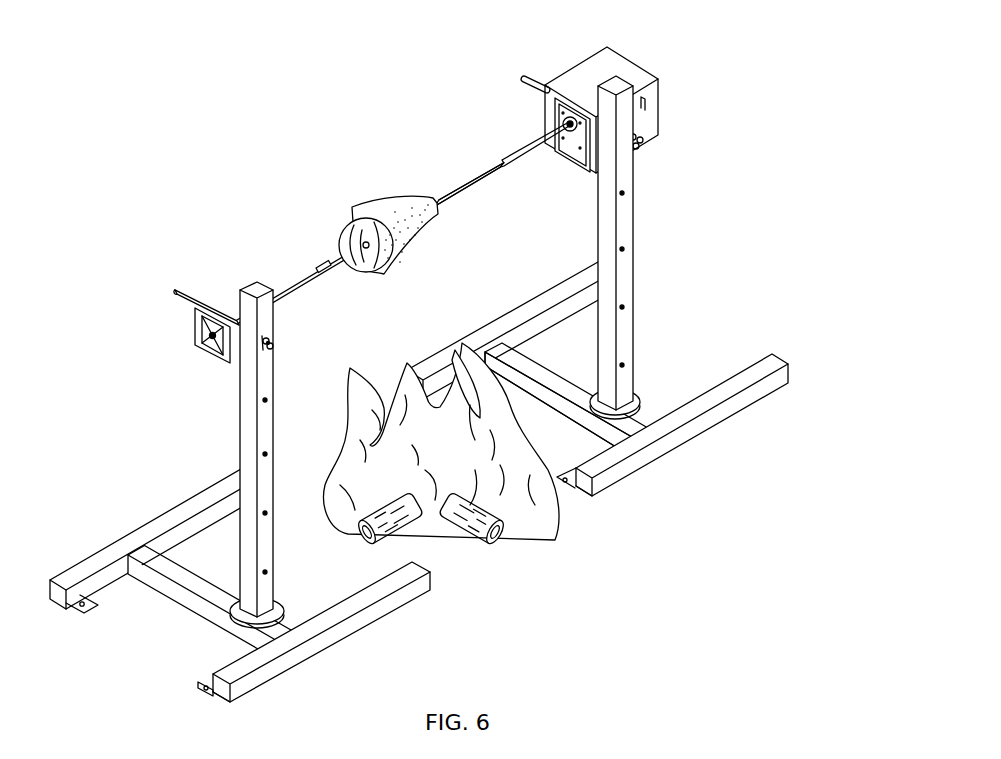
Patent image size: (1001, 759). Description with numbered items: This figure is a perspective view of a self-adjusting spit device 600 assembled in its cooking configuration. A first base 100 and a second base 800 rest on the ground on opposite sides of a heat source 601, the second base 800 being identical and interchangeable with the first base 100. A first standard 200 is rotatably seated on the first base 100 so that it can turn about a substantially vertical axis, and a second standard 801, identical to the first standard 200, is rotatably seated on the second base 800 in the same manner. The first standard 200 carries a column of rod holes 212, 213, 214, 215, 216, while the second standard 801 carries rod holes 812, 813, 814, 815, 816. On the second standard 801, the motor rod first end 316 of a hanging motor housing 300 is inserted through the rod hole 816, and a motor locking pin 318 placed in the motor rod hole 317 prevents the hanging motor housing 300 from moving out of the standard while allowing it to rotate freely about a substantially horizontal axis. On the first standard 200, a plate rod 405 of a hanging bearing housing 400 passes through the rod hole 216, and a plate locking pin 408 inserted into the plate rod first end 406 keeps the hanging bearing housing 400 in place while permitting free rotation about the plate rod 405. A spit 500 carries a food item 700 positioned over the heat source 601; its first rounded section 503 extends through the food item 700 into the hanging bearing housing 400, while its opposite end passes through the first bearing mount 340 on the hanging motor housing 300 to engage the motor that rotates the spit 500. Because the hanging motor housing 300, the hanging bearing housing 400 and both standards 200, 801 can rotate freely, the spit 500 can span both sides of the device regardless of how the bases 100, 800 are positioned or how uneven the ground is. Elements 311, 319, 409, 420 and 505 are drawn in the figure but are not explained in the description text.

The first base 100 is at (305, 668).
The first standard 200 is at (240, 568).
The rod hole 212 is at (267, 574).
The rod hole 213 is at (228, 455).
The rod hole 214 is at (263, 455).
The rod hole 215 is at (263, 401).
The rod hole 216 is at (268, 338).
The hanging motor housing 300 is at (612, 112).
The motor mounting plate 311 is at (592, 165).
The motor rod first end 316 is at (639, 147).
The motor rod hole 317 is at (643, 140).
The motor locking pin 318 is at (646, 100).
The pin 319 is at (541, 78).
The first bearing mount 340 is at (578, 138).
The hanging bearing housing 400 is at (181, 320).
The plate rod 405 is at (181, 290).
The plate rod first end 406 is at (271, 349).
The plate locking pin 408 is at (265, 350).
The rod end 409 is at (178, 290).
The bracket plate 420 is at (200, 338).
The spit 500 is at (388, 218).
The first rounded section 503 is at (290, 285).
The spit coupling 505 is at (534, 142).
The self-adjusting spit device 600 is at (748, 57).
The heat source 601 is at (545, 540).
The food item 700 is at (377, 203).
The second base 800 is at (632, 463).
The second standard 801 is at (602, 247).
The rod hole 812 is at (624, 365).
The rod hole 813 is at (624, 307).
The rod hole 814 is at (624, 249).
The rod hole 815 is at (624, 193).
The rod hole 816 is at (636, 136).